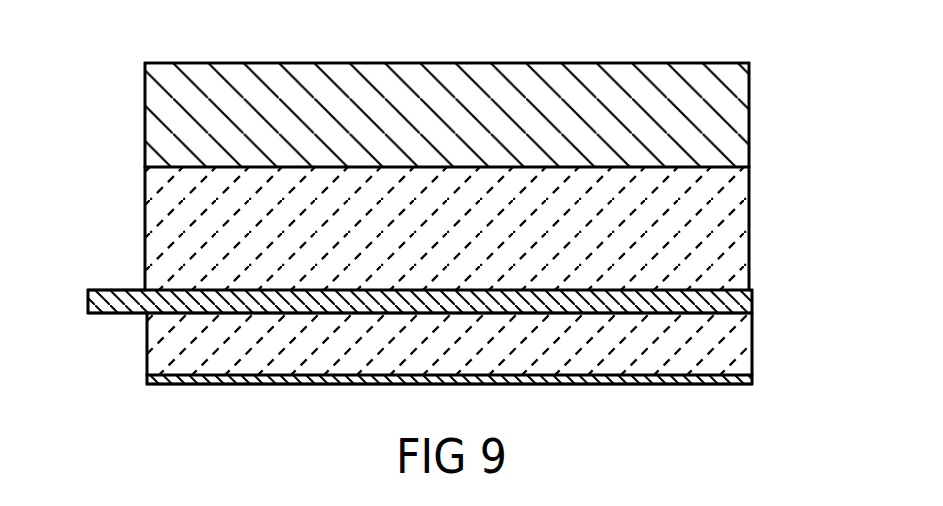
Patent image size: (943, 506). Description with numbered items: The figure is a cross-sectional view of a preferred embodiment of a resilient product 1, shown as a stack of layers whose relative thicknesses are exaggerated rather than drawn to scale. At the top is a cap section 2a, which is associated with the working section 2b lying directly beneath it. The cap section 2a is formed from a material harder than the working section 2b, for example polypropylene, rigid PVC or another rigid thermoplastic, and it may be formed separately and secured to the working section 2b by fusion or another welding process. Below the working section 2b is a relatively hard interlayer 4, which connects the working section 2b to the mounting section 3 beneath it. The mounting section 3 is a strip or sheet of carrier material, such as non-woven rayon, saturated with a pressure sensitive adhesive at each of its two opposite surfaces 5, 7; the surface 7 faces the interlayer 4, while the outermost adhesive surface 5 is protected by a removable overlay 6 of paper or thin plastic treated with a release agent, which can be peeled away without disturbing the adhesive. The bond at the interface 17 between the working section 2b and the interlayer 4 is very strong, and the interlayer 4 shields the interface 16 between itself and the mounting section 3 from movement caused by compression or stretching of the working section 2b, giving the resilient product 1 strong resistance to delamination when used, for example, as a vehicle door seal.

The resilient product 1 is at (772, 200).
The cap section 2a is at (344, 110).
The working section 2b is at (500, 237).
The mounting section 3 is at (727, 342).
The interlayer 4 is at (753, 298).
The adhesive surface 5 is at (717, 376).
The removable overlay 6 is at (620, 385).
The adhesive surface 7 is at (198, 312).
The interface 16 is at (117, 315).
The interface 17 is at (112, 290).